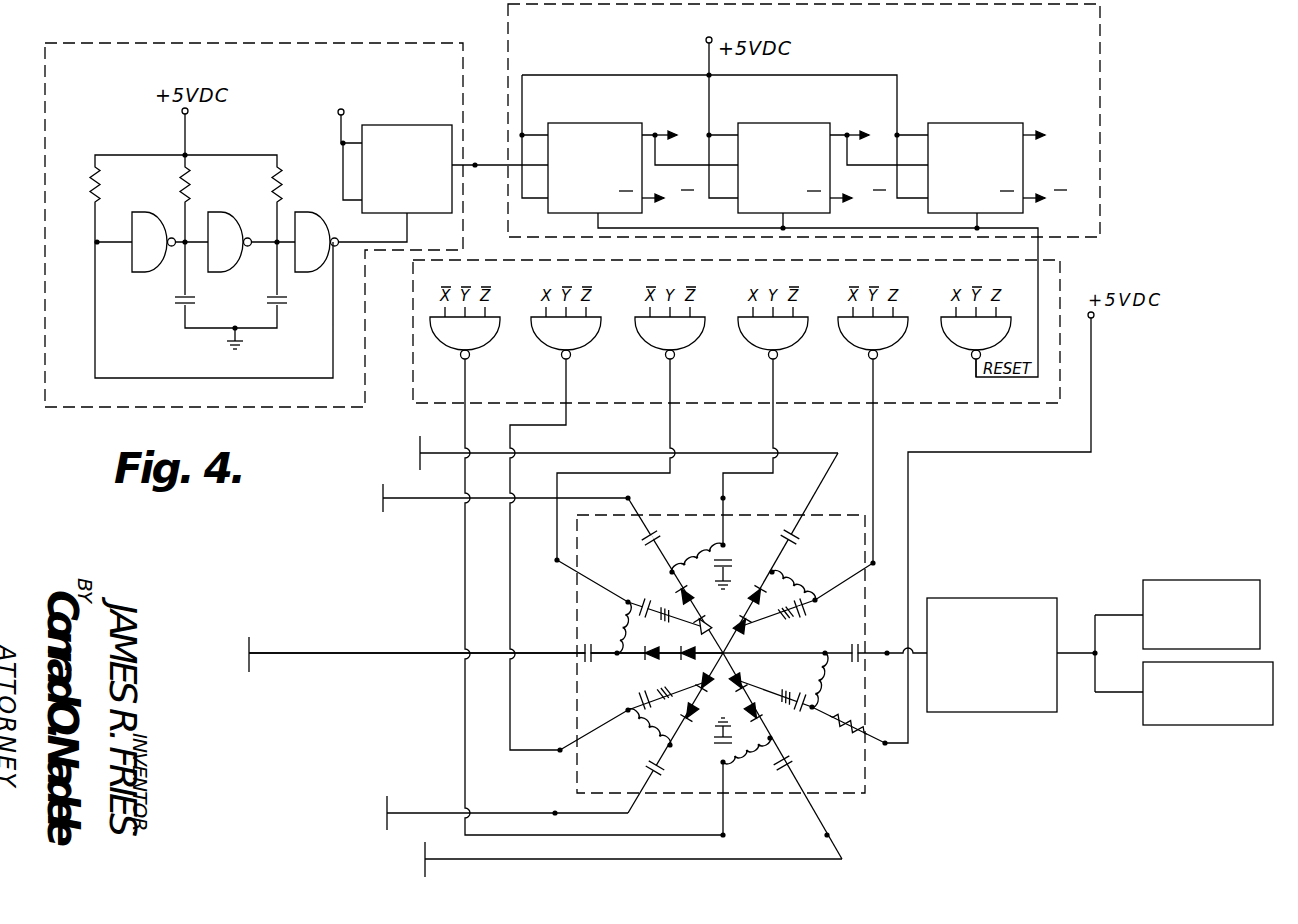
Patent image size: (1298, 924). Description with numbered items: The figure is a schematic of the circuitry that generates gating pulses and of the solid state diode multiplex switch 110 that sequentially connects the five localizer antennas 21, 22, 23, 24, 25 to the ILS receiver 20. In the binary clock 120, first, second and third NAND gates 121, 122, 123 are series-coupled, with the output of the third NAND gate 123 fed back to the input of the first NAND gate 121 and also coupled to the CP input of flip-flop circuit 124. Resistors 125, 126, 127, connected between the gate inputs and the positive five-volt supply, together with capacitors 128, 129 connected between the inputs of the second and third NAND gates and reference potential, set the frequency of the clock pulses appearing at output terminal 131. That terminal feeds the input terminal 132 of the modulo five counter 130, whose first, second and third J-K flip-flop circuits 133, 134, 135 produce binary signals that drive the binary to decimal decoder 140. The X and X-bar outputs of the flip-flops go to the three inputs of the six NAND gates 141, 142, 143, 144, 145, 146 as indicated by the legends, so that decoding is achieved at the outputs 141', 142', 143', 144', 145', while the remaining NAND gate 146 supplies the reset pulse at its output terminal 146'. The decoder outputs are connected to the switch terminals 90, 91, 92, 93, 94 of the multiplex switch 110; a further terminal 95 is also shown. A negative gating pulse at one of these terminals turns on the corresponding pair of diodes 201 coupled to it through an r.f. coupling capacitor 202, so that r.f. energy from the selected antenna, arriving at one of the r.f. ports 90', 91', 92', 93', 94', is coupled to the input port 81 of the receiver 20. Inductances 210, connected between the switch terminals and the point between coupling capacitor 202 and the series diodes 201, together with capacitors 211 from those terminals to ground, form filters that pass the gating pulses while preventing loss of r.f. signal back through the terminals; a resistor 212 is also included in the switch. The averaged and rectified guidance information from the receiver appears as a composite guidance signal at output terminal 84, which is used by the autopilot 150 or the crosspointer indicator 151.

The ILS receiver 20 is at (1003, 598).
The localizer antenna 21 is at (414, 862).
The localizer antenna 22 is at (380, 806).
The localizer antenna 23 is at (244, 648).
The localizer antenna 24 is at (374, 510).
The localizer antenna 25 is at (417, 453).
The r.f. input port 81 is at (887, 653).
The receiver output terminal 84 is at (1098, 653).
The multiplex switch terminal 90 is at (746, 805).
The r.f. port 90' is at (796, 756).
The multiplex switch terminal 91 is at (615, 717).
The r.f. port 91' is at (622, 734).
The multiplex switch terminal 92 is at (617, 592).
The r.f. port 92' is at (486, 636).
The multiplex switch terminal 93 is at (741, 515).
The r.f. port 93' is at (674, 567).
The multiplex switch terminal 94 is at (821, 593).
The r.f. port 94' is at (791, 553).
The switch terminal 95 is at (885, 743).
The multiplex switch 110 is at (865, 793).
The binary clock pulse generator 120 is at (316, 43).
The first NAND gate 121 is at (141, 272).
The second NAND gate 122 is at (220, 272).
The third NAND gate 123 is at (306, 272).
The flip-flop circuit 124 is at (412, 125).
The resistor 125 is at (104, 183).
The resistor 126 is at (192, 183).
The resistor 127 is at (278, 180).
The capacitor 128 is at (179, 320).
The capacitor 129 is at (284, 311).
The modulo five counter 130 is at (1100, 69).
The output terminal 131 is at (478, 168).
The input terminal 132 is at (480, 160).
The first J-K flip-flop circuit 133 is at (604, 112).
The second J-K flip-flop circuit 134 is at (796, 112).
The third J-K flip-flop circuit 135 is at (975, 123).
The binary to decimal decoder 140 is at (1060, 277).
The NAND gate 141 is at (478, 338).
The output 141' is at (571, 597).
The NAND gate 142 is at (579, 338).
The output 142' is at (538, 554).
The NAND gate 143 is at (680, 338).
The output 143' is at (616, 459).
The NAND gate 144 is at (785, 336).
The output 144' is at (750, 428).
The NAND gate 145 is at (889, 336).
The output 145' is at (848, 461).
The NAND gate 146 is at (989, 333).
The output terminal 146' is at (944, 374).
The autopilot 150 is at (1200, 580).
The crosspointer indicator 151 is at (1203, 725).
The diode 201 is at (765, 718).
The r.f. coupling capacitor 202 is at (787, 760).
The inductance 210 is at (744, 764).
The capacitor 211 is at (721, 740).
The resistor 212 is at (856, 710).